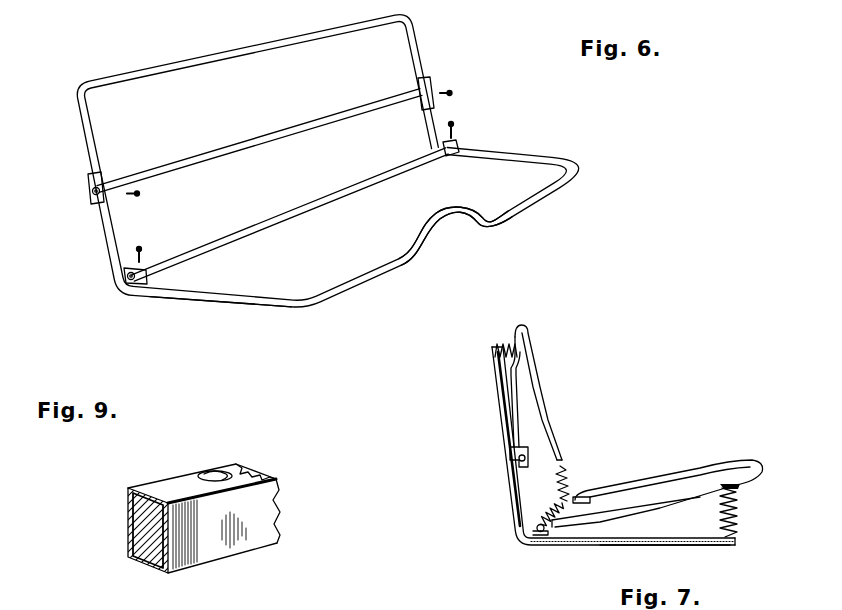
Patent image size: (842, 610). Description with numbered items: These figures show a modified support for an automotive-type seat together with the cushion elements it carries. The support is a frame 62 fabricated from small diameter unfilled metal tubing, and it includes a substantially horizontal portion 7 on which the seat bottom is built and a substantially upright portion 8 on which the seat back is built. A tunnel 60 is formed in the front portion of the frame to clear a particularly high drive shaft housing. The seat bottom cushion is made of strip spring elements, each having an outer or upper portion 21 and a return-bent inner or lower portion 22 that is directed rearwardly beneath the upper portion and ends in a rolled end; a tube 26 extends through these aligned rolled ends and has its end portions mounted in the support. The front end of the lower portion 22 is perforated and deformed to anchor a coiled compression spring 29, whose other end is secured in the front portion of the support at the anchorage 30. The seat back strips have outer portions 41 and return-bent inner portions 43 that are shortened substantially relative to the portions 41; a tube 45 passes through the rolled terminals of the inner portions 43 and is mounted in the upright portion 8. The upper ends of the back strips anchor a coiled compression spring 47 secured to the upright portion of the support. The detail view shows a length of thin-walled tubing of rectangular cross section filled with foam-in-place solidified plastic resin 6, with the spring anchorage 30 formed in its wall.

In FIG. 9, the foam-in-place solidified plastic resin 6 is at (136, 522).
In FIG. 6, the substantially horizontal portion 7 is at (194, 300).
In FIG. 7, the substantially horizontal portion 7 is at (601, 542).
In FIG. 6, the substantially upright portion 8 is at (82, 92).
In FIG. 7, the substantially upright portion 8 is at (494, 388).
In FIG. 7, the upper portion 21 is at (652, 486).
In FIG. 7, the lower portion 22 is at (668, 503).
In FIG. 6, the tube 26 is at (284, 212).
In FIG. 7, the tube 26 is at (541, 532).
In FIG. 7, the coiled compression spring 29 is at (738, 508).
In FIG. 9, the spring anchorage 30 is at (208, 471).
In FIG. 7, the portion 41 is at (548, 412).
In FIG. 7, the inner portion 43 is at (517, 394).
In FIG. 6, the tube 45 is at (250, 140).
In FIG. 7, the tube 45 is at (519, 459).
In FIG. 7, the coiled compression spring 47 is at (505, 342).
In FIG. 6, the tunnel 60 is at (451, 228).
In FIG. 6, the frame 62 is at (257, 314).
In FIG. 7, the frame 62 is at (663, 545).